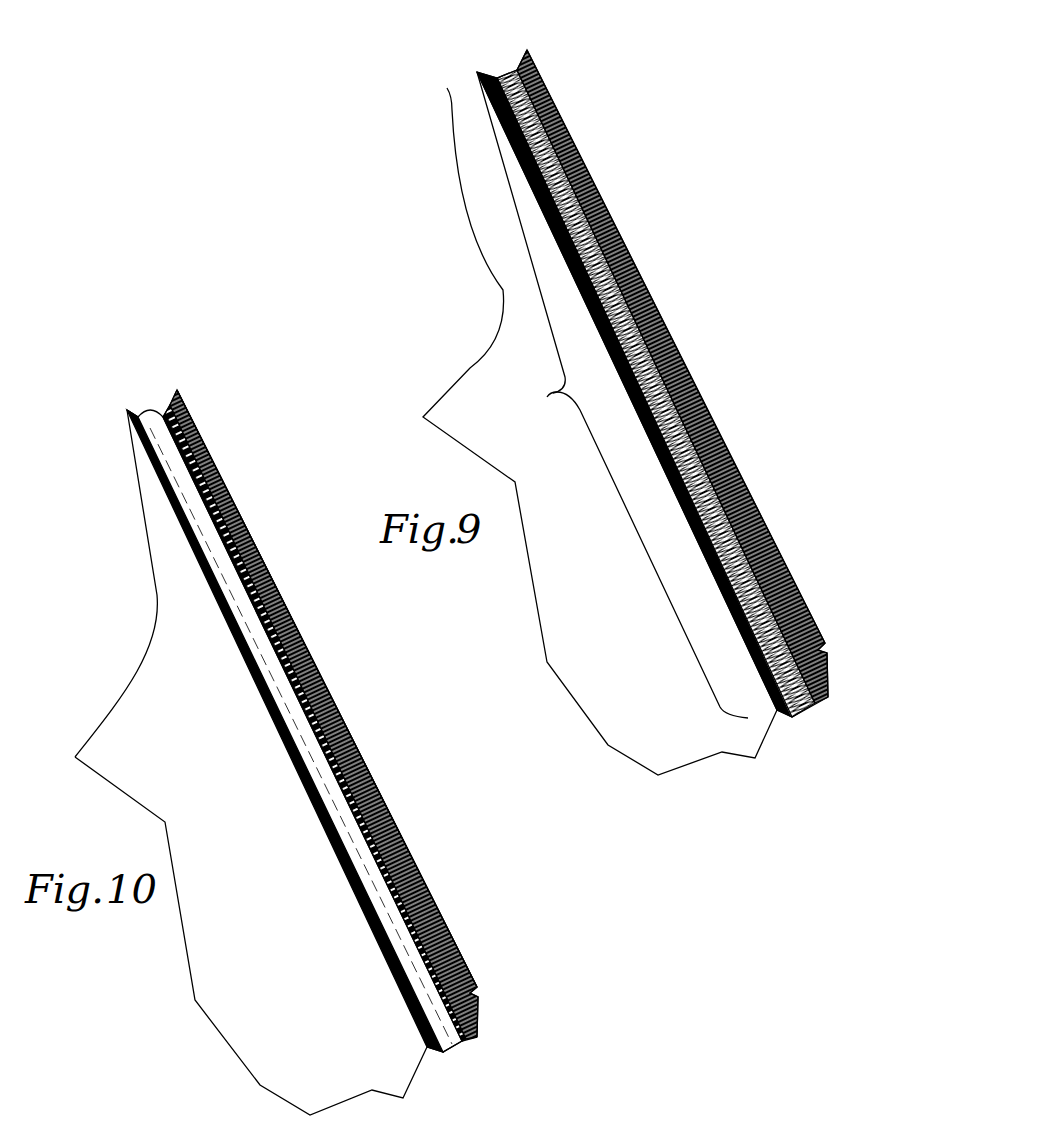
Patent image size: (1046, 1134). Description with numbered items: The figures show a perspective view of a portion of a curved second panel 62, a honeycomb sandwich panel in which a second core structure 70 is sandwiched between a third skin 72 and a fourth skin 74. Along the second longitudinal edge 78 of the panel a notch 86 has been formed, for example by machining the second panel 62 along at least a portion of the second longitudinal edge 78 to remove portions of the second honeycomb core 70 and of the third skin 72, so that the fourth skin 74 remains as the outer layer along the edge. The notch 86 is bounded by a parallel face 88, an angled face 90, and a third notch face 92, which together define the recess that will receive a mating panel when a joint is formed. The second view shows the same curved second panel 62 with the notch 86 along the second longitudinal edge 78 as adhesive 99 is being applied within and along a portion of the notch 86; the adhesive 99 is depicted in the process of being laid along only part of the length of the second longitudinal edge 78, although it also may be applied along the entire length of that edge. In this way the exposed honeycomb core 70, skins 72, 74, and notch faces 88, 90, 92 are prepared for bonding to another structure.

In FIG. 9, the second panel 62 is at (679, 207).
In FIG. 10, the second panel 62 is at (441, 833).
In FIG. 9, the second core structure 70 is at (727, 448).
In FIG. 9, the third skin 72 is at (613, 604).
In FIG. 10, the third skin 72 is at (276, 918).
In FIG. 9, the fourth skin 74 is at (665, 323).
In FIG. 10, the fourth skin 74 is at (205, 445).
In FIG. 9, the second longitudinal edge 78 is at (547, 397).
In FIG. 10, the second longitudinal edge 78 is at (131, 400).
In FIG. 9, the notch 86 is at (504, 64).
In FIG. 10, the notch 86 is at (187, 383).
In FIG. 9, the parallel face 88 is at (695, 393).
In FIG. 10, the parallel face 88 is at (428, 927).
In FIG. 9, the angled face 90 is at (760, 522).
In FIG. 10, the angled face 90 is at (397, 985).
In FIG. 9, the third notch face 92 is at (640, 421).
In FIG. 10, the third notch face 92 is at (257, 660).
In FIG. 10, the adhesive 99 is at (443, 1052).